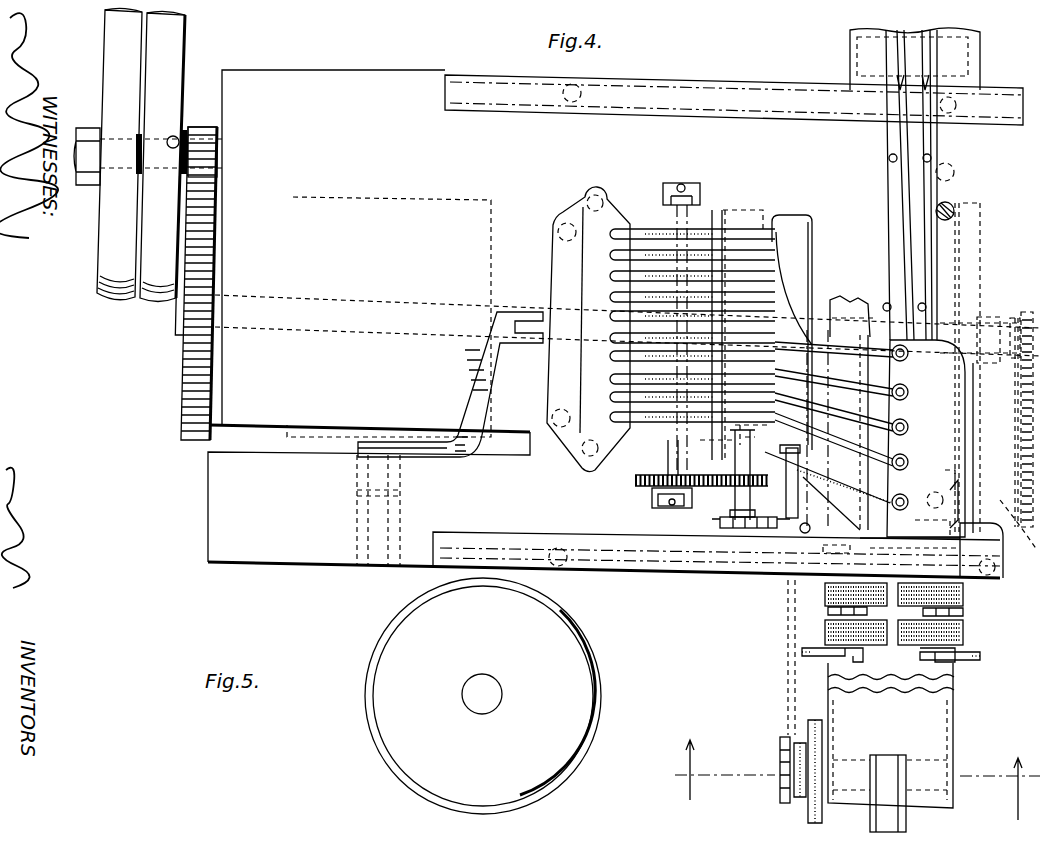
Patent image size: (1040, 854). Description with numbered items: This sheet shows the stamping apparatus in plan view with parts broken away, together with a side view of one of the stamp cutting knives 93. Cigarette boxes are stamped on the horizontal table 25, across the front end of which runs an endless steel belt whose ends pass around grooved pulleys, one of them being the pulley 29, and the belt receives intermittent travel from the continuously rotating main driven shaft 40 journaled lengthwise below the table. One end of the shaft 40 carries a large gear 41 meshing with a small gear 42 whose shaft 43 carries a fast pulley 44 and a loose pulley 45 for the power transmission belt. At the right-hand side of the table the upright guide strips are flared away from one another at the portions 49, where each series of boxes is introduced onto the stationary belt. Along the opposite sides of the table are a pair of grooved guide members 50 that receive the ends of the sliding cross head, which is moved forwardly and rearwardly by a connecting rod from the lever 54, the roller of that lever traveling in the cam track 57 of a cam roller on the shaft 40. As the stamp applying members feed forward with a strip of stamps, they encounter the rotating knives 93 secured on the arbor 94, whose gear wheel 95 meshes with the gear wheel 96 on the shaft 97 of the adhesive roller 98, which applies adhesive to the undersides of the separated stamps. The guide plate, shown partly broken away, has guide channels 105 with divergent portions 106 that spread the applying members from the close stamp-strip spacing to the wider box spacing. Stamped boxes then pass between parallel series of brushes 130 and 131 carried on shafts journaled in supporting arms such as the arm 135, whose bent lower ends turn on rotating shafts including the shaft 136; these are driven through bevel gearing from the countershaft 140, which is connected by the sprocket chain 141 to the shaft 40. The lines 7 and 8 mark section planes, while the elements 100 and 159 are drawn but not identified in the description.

In FIG. 4, the section line 7 is at (779, 492).
In FIG. 4, the section line 8 is at (848, 780).
In FIG. 4, the horizontal table 25 is at (378, 80).
In FIG. 4, the grooved pulley 29 is at (915, 744).
In FIG. 4, the main driven shaft 40 is at (355, 314).
In FIG. 4, the large gear 41 is at (190, 368).
In FIG. 4, the small gear 42 is at (217, 163).
In FIG. 4, the shaft 43 is at (178, 140).
In FIG. 4, the fast pulley 44 is at (118, 65).
In FIG. 4, the loose pulley 45 is at (173, 63).
In FIG. 4, the flared portions 49 is at (900, 48).
In FIG. 4, the grooved guide members 50 is at (793, 105).
In FIG. 4, the lever 54 is at (485, 407).
In FIG. 4, the cam track 57 is at (782, 780).
In FIG. 4, the rotating knives 93 is at (668, 422).
In FIG. 5, the rotating knives 93 is at (483, 696).
In FIG. 4, the arbor 94 is at (668, 474).
In FIG. 4, the gear wheel 95 is at (712, 270).
In FIG. 4, the gear wheel 96 is at (735, 485).
In FIG. 4, the shaft 97 is at (742, 452).
In FIG. 4, the adhesive roller 98 is at (777, 240).
In FIG. 4, the base plate 100 is at (746, 526).
In FIG. 4, the guide channels 105 is at (637, 235).
In FIG. 4, the divergent portions 106 is at (958, 466).
In FIG. 4, the brushes 130 is at (825, 592).
In FIG. 4, the brushes 131 is at (963, 630).
In FIG. 4, the supporting arm 135 is at (815, 654).
In FIG. 4, the rotating shaft 136 is at (963, 600).
In FIG. 4, the countershaft 140 is at (1000, 539).
In FIG. 4, the sprocket chain 141 is at (980, 369).
In FIG. 4, the spring 159 is at (960, 487).